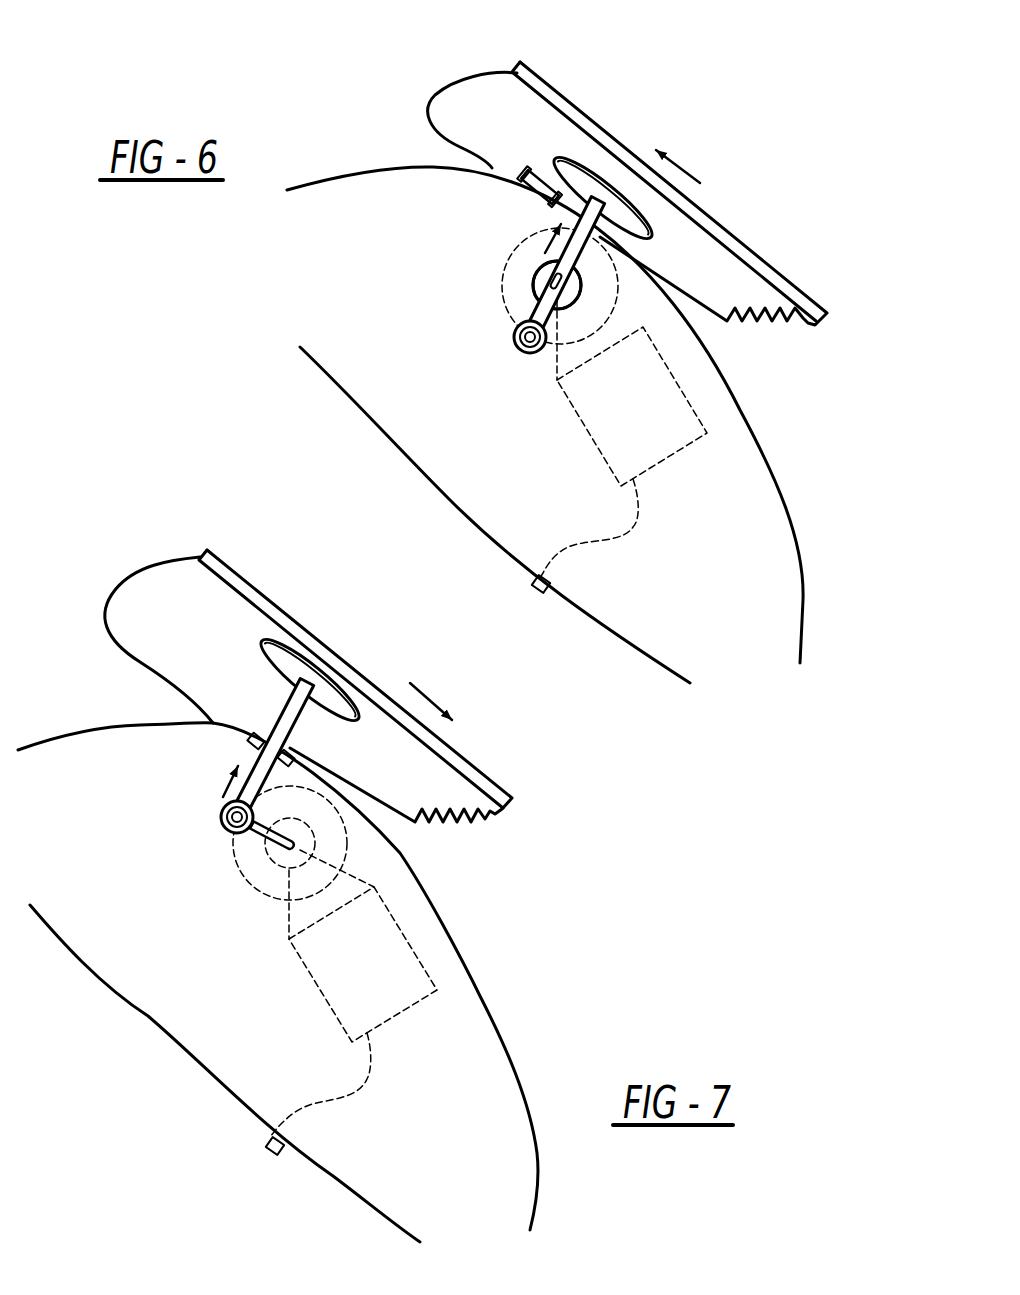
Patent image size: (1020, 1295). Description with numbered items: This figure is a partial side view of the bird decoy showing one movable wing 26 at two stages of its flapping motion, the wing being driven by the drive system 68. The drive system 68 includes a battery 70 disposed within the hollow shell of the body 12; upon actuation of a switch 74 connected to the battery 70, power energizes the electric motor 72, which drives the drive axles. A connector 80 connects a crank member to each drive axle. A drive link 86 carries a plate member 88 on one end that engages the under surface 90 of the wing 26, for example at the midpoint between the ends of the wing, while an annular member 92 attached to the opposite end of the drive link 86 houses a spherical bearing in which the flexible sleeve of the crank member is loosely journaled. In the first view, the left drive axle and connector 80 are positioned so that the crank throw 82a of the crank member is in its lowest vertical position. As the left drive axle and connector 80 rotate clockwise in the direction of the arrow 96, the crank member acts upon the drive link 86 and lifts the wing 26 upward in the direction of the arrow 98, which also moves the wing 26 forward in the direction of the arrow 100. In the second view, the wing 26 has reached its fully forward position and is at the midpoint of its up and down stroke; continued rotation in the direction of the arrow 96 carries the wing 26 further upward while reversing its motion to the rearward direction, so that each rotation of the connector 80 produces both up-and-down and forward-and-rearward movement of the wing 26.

In FIG. 6, the body 12 is at (447, 473).
In FIG. 7, the body 12 is at (180, 1033).
In FIG. 6, the movable wing 26 is at (473, 68).
In FIG. 7, the movable wing 26 is at (165, 556).
In FIG. 6, the drive system 68 is at (690, 393).
In FIG. 7, the drive system 68 is at (406, 931).
In FIG. 7, the battery 70 is at (435, 984).
In FIG. 6, the electric motor 72 is at (582, 296).
In FIG. 7, the electric motor 72 is at (345, 840).
In FIG. 6, the switch 74 is at (530, 578).
In FIG. 7, the switch 74 is at (265, 1140).
In FIG. 6, the connector 80 is at (532, 262).
In FIG. 7, the connector 80 is at (305, 850).
In FIG. 6, the crank throw 82a is at (538, 276).
In FIG. 7, the crank throw 82a is at (254, 830).
In FIG. 6, the drive link 86 is at (585, 262).
In FIG. 7, the drive link 86 is at (283, 731).
In FIG. 6, the plate member 88 is at (667, 227).
In FIG. 7, the plate member 88 is at (328, 693).
In FIG. 6, the under surface 90 is at (532, 115).
In FIG. 7, the under surface 90 is at (210, 612).
In FIG. 6, the annular member 92 is at (512, 341).
In FIG. 7, the annular member 92 is at (220, 820).
In FIG. 6, the arrow 96 is at (502, 276).
In FIG. 7, the arrow 96 is at (235, 852).
In FIG. 6, the arrow 98 is at (543, 241).
In FIG. 7, the arrow 98 is at (228, 782).
In FIG. 6, the arrow 100 is at (682, 167).
In FIG. 7, the arrow 100 is at (435, 702).